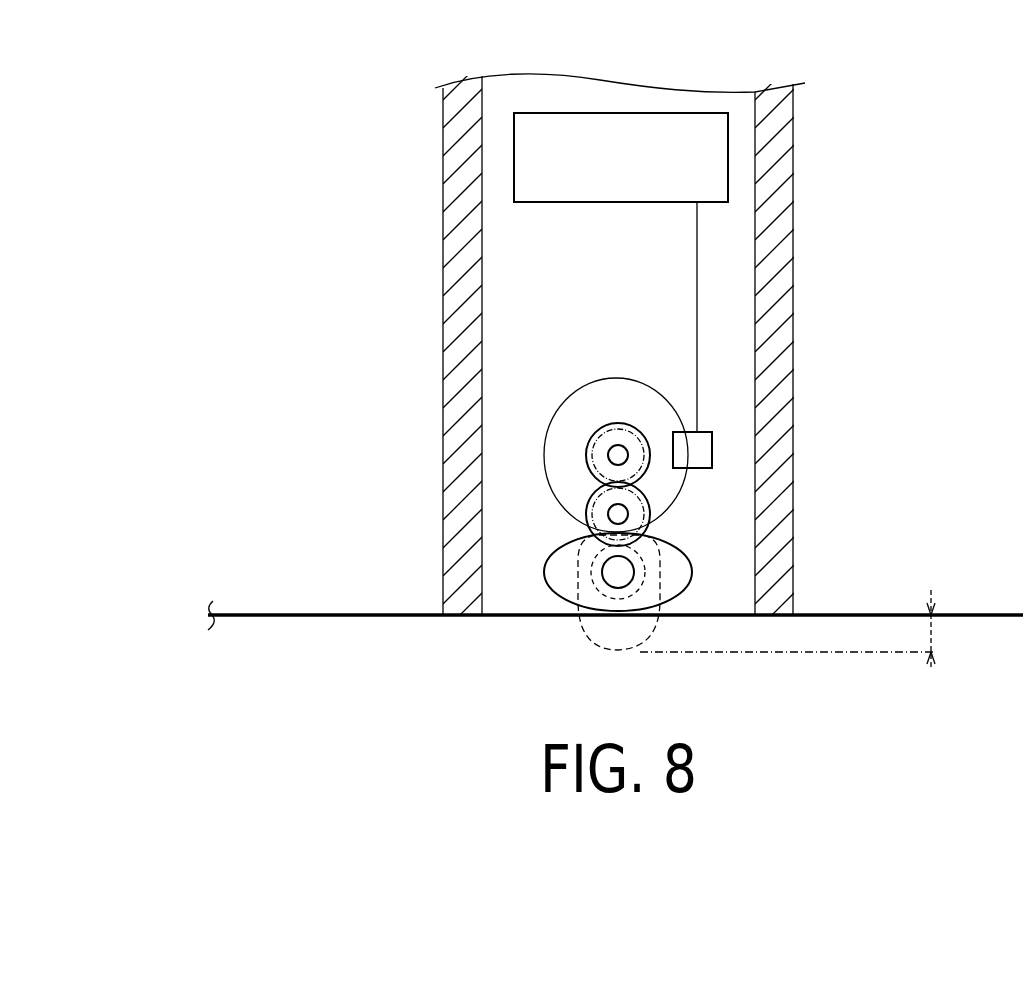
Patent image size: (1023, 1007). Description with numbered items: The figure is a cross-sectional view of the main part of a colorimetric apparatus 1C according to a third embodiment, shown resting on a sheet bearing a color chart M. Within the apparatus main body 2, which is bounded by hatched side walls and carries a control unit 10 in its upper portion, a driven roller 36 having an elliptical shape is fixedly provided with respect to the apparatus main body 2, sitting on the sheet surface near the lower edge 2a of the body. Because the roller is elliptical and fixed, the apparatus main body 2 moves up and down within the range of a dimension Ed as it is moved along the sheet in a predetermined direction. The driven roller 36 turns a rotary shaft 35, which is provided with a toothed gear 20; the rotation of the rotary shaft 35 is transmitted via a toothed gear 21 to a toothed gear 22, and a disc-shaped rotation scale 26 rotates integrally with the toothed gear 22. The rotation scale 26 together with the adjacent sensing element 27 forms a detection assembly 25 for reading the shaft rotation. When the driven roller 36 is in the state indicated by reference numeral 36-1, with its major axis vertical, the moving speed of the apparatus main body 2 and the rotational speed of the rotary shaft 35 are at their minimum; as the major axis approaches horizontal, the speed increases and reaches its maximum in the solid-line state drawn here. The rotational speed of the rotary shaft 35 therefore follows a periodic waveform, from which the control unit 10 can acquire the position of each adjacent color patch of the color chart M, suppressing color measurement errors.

The colorimetric apparatus 1C is at (412, 130).
The apparatus main body 2 is at (793, 236).
The bottom surface of housing 2a is at (462, 617).
The control unit 10 is at (715, 148).
The toothed gear 20 is at (546, 572).
The toothed gear 21 is at (585, 513).
The toothed gear 22 is at (586, 456).
The drive unit 25 is at (851, 420).
The rotation scale 26 is at (680, 496).
The drive motor 27 is at (712, 448).
The rotary shaft 35 is at (622, 572).
The driven roller 36 is at (692, 572).
The driven roller state 36-1 is at (600, 650).
The color chart M is at (312, 613).
The dimension Ed is at (796, 614).